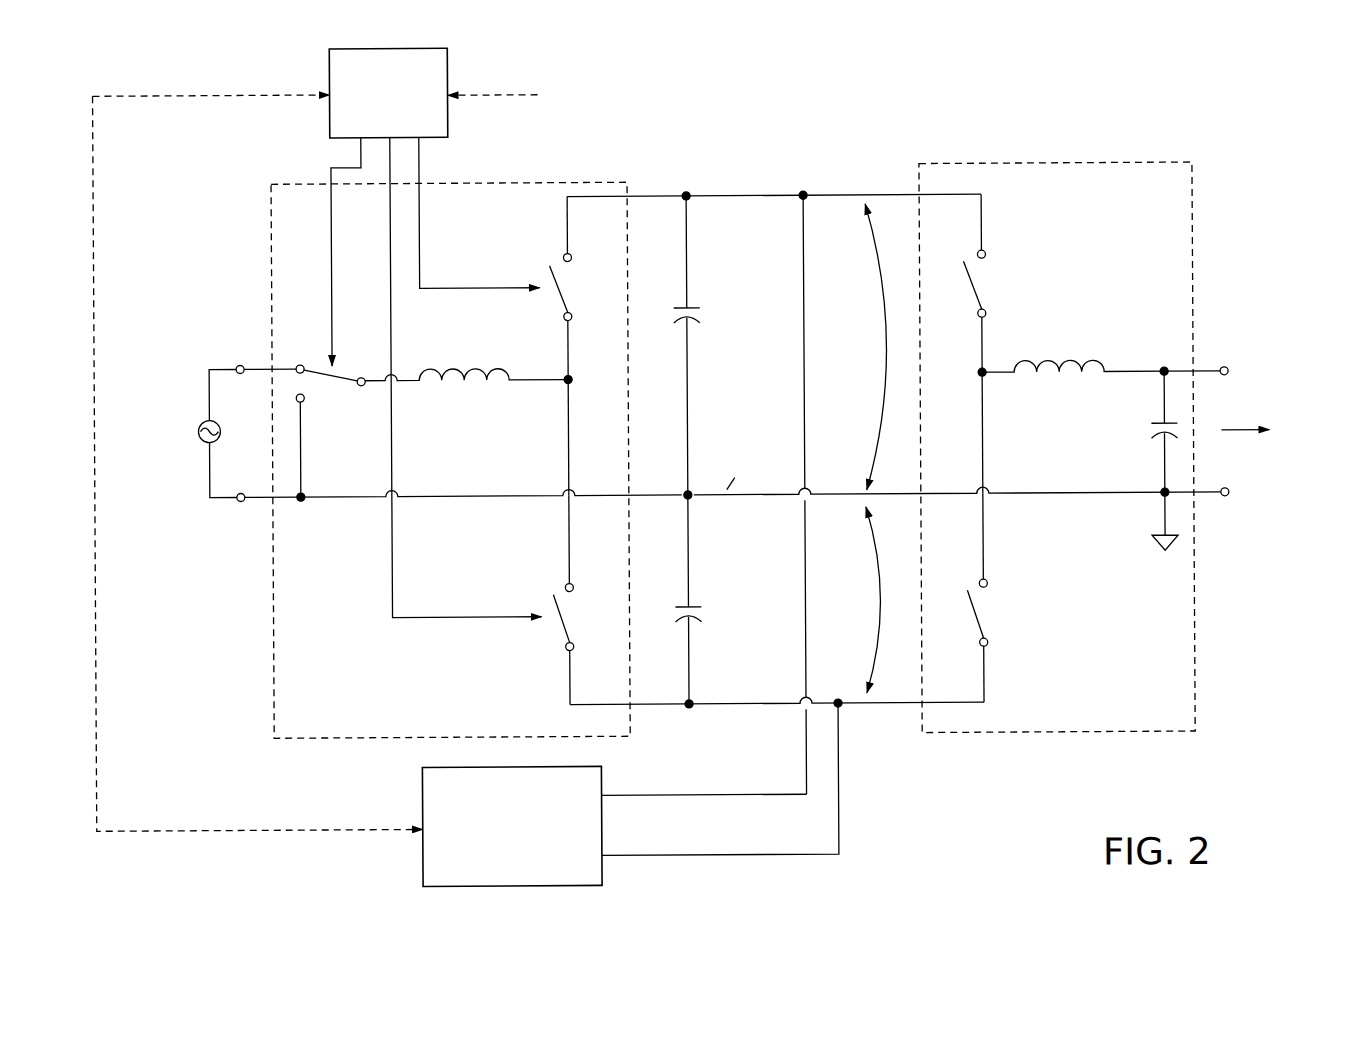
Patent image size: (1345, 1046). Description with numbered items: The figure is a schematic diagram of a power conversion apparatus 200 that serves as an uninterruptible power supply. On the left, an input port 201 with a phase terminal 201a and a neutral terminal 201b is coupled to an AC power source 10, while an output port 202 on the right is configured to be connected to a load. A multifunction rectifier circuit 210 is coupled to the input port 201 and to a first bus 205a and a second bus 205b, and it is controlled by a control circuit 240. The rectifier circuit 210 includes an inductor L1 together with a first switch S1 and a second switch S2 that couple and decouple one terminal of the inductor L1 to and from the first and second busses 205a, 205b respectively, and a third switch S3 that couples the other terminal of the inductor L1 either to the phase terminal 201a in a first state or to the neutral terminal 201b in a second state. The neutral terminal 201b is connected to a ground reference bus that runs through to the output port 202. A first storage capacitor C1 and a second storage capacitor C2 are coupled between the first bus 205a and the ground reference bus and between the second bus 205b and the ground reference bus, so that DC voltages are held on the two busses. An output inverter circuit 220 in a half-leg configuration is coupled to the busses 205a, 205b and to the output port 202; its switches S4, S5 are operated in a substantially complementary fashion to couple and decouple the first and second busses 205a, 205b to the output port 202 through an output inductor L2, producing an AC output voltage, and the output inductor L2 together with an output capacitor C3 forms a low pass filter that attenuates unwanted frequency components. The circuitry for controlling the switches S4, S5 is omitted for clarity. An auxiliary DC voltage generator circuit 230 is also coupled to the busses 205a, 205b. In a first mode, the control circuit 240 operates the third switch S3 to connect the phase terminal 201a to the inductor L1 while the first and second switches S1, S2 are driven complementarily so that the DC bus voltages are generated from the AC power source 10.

The power conversion apparatus 200 is at (1258, 90).
The input port 201 is at (186, 411).
The phase terminal 201a is at (239, 363).
The neutral terminal 201b is at (240, 504).
The AC power source 10 is at (202, 444).
The multifunction rectifier circuit 210 is at (452, 181).
The output inverter circuit 220 is at (1060, 165).
The auxiliary DC voltage generator circuit 230 is at (514, 766).
The control circuit 240 is at (396, 46).
The first bus 205a is at (739, 195).
The second bus 205b is at (718, 706).
The output port 202 is at (1259, 373).
The first switch S1 is at (538, 257).
The second switch S2 is at (540, 593).
The third switch S3 is at (327, 397).
The inverter switch S4 is at (1008, 285).
The inverter switch S5 is at (1001, 599).
The inductor L1 is at (470, 388).
The output inductor L2 is at (1069, 360).
The first storage capacitor C1 is at (713, 307).
The second storage capacitor C2 is at (712, 607).
The output capacitor C3 is at (1143, 433).